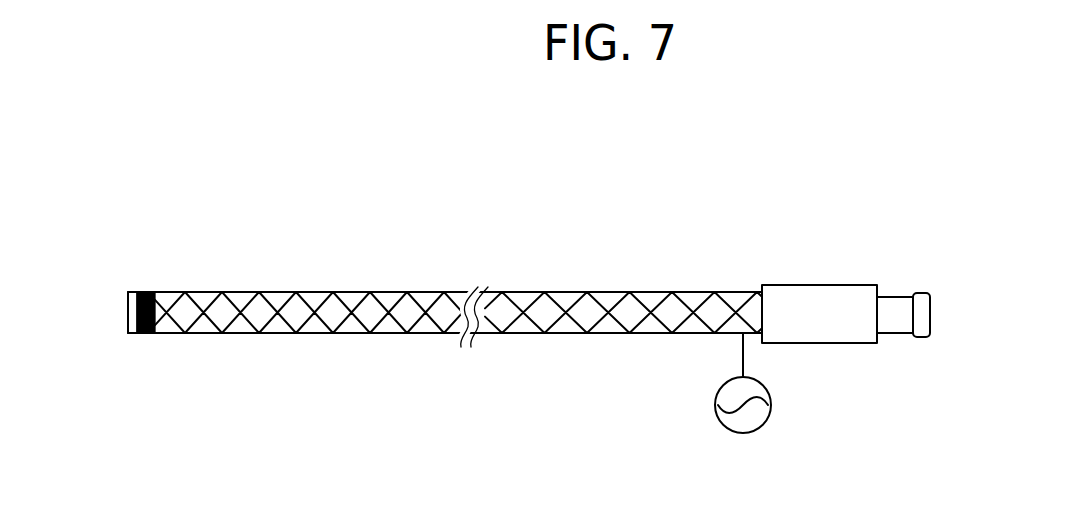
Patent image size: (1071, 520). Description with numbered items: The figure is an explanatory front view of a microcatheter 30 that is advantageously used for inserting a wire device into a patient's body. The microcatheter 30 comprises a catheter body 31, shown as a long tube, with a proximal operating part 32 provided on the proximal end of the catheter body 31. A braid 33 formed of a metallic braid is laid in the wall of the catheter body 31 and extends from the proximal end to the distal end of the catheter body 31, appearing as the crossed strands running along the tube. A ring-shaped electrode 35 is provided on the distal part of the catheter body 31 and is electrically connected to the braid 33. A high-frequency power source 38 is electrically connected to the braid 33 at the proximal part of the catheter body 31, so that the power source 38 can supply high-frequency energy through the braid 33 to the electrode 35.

The microcatheter 30 is at (562, 285).
The catheter body 31 is at (377, 335).
The proximal operating part 32 is at (903, 337).
The braid 33 is at (331, 306).
The electrode 35 is at (147, 335).
The high-frequency power source 38 is at (730, 433).